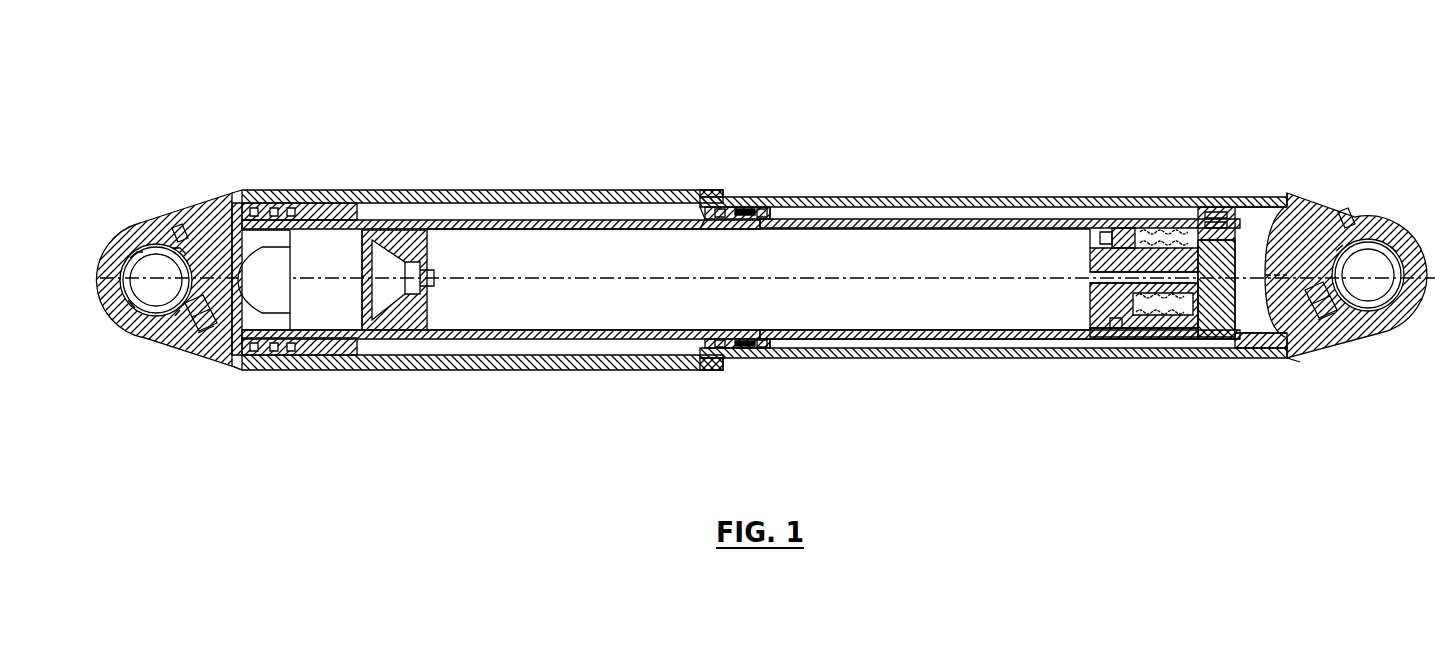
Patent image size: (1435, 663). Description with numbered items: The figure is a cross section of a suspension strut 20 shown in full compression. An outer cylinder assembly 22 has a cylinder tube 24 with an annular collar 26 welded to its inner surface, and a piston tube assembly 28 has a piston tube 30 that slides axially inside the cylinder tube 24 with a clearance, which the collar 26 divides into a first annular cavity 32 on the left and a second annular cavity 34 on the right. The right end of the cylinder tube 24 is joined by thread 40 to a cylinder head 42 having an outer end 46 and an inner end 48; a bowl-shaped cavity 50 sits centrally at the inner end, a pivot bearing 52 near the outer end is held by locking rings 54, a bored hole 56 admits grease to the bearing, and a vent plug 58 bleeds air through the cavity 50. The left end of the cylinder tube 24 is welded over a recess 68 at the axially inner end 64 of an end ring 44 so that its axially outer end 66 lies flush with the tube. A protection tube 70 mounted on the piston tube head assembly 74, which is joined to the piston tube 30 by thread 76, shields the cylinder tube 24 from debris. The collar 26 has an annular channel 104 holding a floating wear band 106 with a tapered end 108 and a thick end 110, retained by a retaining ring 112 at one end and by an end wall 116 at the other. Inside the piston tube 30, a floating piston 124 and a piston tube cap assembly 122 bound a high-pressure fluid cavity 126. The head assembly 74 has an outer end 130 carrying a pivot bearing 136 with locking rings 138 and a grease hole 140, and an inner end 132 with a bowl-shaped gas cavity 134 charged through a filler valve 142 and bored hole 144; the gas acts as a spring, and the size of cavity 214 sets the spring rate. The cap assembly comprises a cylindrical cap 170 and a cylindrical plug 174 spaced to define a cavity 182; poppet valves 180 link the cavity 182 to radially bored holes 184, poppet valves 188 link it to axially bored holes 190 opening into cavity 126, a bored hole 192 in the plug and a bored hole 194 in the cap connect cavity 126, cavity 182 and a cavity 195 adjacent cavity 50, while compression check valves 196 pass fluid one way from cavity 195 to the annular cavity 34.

The suspension strut 20 is at (962, 93).
The outer cylinder assembly 22 is at (1002, 170).
The cylinder tube 24 is at (890, 197).
The annular collar 26 is at (724, 198).
The piston tube assembly 28 is at (936, 344).
The piston tube 30 is at (1004, 340).
The first annular cavity 32 is at (598, 221).
The second annular cavity 34 is at (962, 218).
The thread 40 is at (1260, 217).
The cylinder head 42 is at (1333, 217).
The end ring 44 is at (290, 212).
The outer end 46 is at (1408, 218).
The inner end 48 is at (1290, 356).
The bowl-shaped cavity 50 is at (1260, 318).
The pivot bearing 52 is at (1384, 332).
The locking rings 54 is at (1382, 232).
The bored hole 56 is at (1348, 217).
The vent plug 58 is at (1330, 345).
The axially inner end 64 is at (345, 204).
The axially outer end 66 is at (252, 206).
The recess 68 is at (318, 370).
The protection tube 70 is at (495, 190).
The piston tube head assembly 74 is at (160, 222).
The thread 76 is at (225, 200).
The annular channel 104 is at (755, 208).
The floating wear band 106 is at (742, 230).
The tapered end 108 is at (762, 230).
The thick end 110 is at (726, 231).
The retaining ring 112 is at (772, 216).
The end wall 116 is at (705, 232).
The piston tube cap assembly 122 is at (1070, 263).
The floating piston 124 is at (430, 257).
The cavity 126 is at (628, 313).
The outer end 130 is at (130, 333).
The inner end 132 is at (224, 368).
The bowl shaped cavity 134 is at (251, 275).
The pivot bearing 136 is at (150, 336).
The locking rings 138 is at (133, 223).
The bored hole 140 is at (178, 226).
The filler valve 142 is at (205, 345).
The bored hole 144 is at (238, 298).
The cylindrical cap 170 is at (1165, 337).
The cylindrical plug 174 is at (1090, 240).
The poppet valves 180 is at (1148, 217).
The cavity 182 is at (1195, 337).
The radially bored holes 184 is at (1110, 217).
The poppet valves 188 is at (1122, 338).
The axially bored holes 190 is at (1100, 337).
The bored hole 192 is at (1090, 300).
The bored hole 194 is at (1273, 217).
The cavity 195 is at (1232, 340).
The compression check valves 196 is at (1223, 217).
The cavity 214 is at (310, 318).